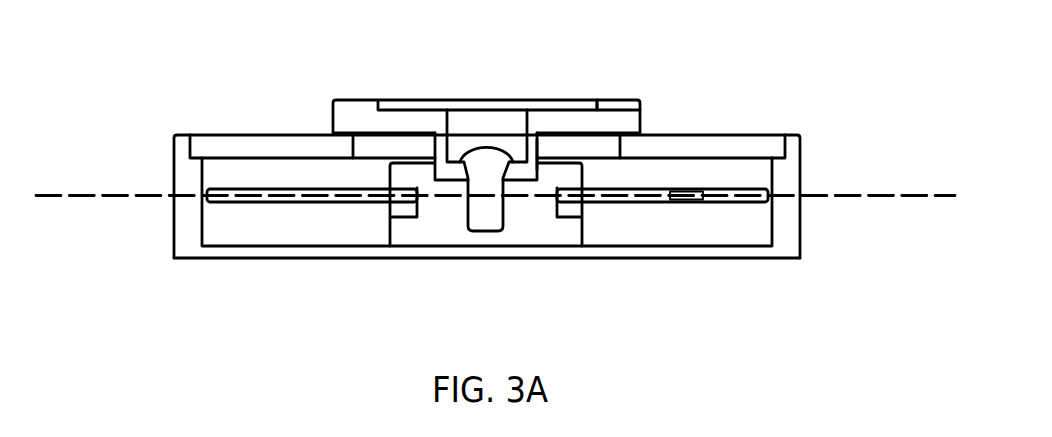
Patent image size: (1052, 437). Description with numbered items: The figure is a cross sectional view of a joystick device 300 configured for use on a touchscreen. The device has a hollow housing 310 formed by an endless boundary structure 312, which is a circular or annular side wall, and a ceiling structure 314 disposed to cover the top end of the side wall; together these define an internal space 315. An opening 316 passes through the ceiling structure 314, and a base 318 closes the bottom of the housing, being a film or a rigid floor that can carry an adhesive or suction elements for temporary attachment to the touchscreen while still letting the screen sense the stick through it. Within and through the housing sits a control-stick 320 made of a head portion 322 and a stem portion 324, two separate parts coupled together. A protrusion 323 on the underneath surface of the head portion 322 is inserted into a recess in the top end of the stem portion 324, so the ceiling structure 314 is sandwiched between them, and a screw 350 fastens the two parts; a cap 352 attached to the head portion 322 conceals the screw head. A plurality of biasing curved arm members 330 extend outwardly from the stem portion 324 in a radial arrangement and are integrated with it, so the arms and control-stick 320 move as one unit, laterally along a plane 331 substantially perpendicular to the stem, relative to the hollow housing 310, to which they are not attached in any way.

The joystick device 300 is at (773, 75).
The hollow housing 310 is at (690, 132).
The endless boundary structure 312 is at (783, 224).
The ceiling structure 314 is at (722, 146).
The internal space 315 is at (685, 236).
The opening 316 is at (385, 145).
The base 318 is at (327, 254).
The control-stick 320 is at (560, 96).
The head portion 322 is at (617, 106).
The protrusion 323 is at (537, 143).
The stem portion 324 is at (442, 230).
The biasing curved arm members 330 is at (253, 204).
The plane 331 is at (890, 196).
The screw 350 is at (490, 222).
The cap 352 is at (445, 103).